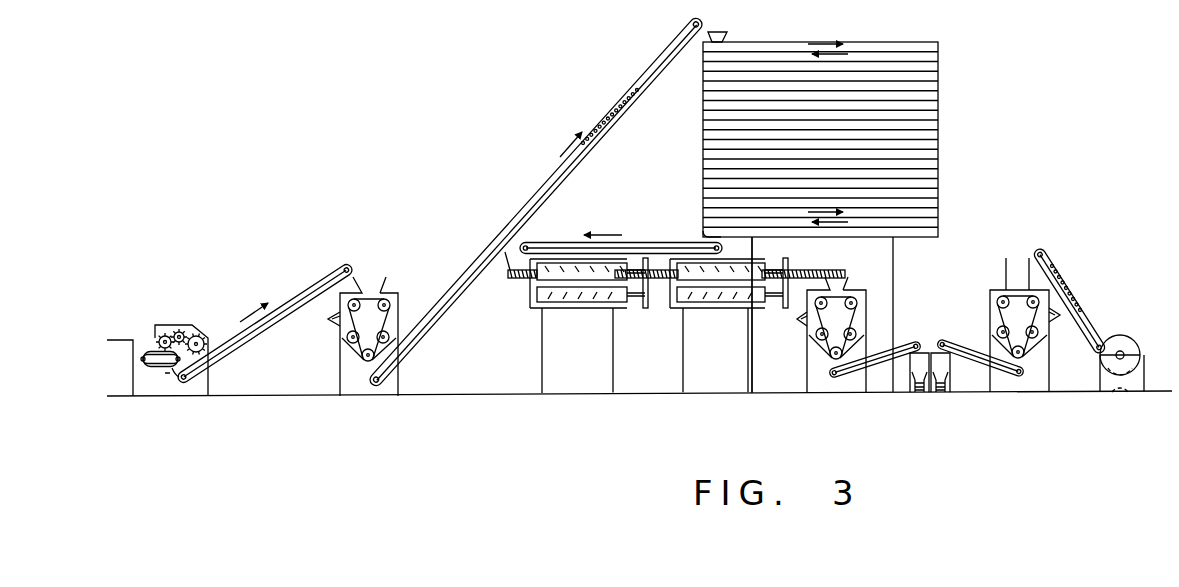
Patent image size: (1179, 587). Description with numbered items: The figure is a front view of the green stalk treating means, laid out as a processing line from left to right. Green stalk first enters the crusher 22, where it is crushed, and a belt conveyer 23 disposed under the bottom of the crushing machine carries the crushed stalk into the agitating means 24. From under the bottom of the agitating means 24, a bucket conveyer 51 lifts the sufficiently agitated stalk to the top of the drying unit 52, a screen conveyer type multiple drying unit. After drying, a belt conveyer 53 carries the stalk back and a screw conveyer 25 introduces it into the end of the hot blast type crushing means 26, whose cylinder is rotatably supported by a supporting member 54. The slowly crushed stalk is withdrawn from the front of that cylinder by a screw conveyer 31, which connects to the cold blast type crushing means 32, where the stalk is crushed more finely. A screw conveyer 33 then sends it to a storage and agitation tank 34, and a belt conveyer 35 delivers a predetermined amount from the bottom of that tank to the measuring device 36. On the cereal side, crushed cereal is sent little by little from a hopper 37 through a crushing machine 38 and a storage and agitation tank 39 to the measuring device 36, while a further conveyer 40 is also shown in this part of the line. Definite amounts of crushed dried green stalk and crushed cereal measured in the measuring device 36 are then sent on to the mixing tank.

The crusher 22 is at (200, 330).
The belt conveyer 23 is at (296, 291).
The agitating means 24 is at (398, 293).
The screw conveyer 25 is at (521, 280).
The hot blast type crushing means 26 is at (575, 310).
The screw conveyer 31 is at (660, 283).
The cold blast type crushing means 32 is at (715, 310).
The screw conveyer 33 is at (808, 270).
The storage and agitation tank 34 is at (857, 290).
The belt conveyer 35 is at (903, 343).
The measuring device 36 is at (930, 352).
The hopper 37 is at (1130, 341).
The crushing machine 38 is at (1105, 340).
The storage and agitation tank 39 is at (995, 290).
The conveyor 40 is at (962, 350).
The bucket conveyer 51 is at (618, 103).
The drying unit 52 is at (790, 42).
The belt conveyer 53 is at (621, 227).
The supporting member 54 is at (755, 355).